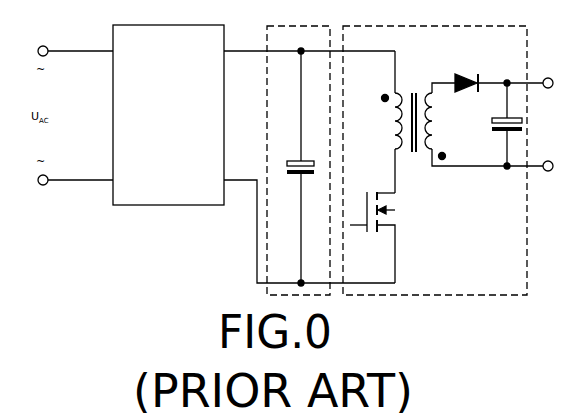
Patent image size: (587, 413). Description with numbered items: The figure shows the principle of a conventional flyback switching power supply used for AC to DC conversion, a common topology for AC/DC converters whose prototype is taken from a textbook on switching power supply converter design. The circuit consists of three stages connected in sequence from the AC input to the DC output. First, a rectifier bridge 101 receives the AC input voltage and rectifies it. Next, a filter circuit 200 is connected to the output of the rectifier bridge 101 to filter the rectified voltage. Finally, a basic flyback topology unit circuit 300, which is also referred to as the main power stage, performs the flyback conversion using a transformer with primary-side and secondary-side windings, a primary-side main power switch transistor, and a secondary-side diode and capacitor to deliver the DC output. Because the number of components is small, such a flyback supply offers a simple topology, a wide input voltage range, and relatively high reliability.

The rectifier bridge 101 is at (168, 115).
The filter circuit 200 is at (267, 248).
The basic flyback topology unit circuit 300 is at (527, 190).